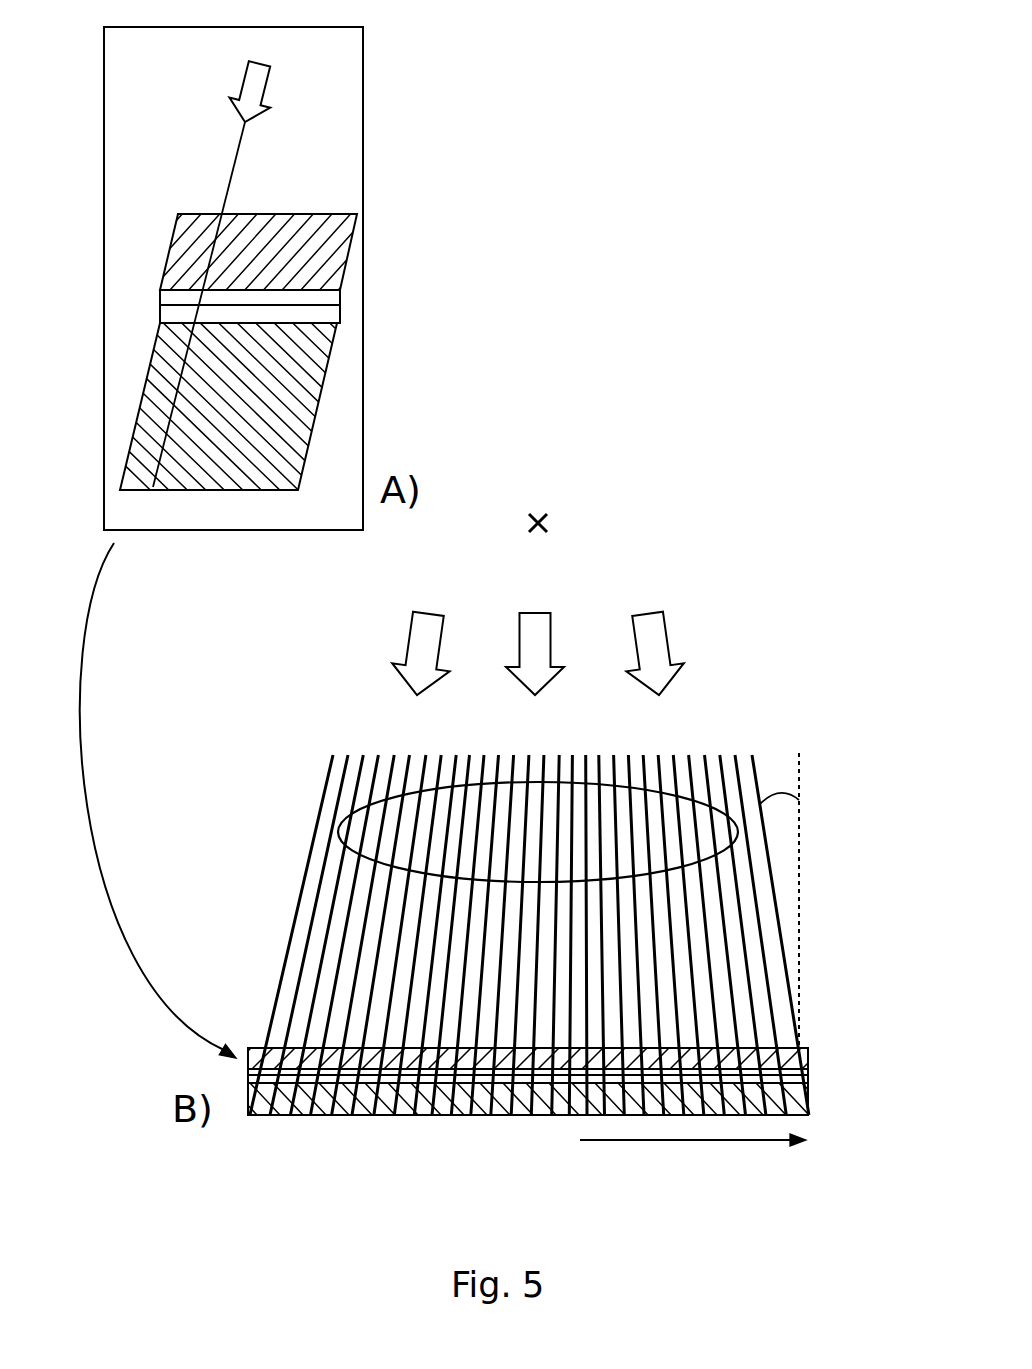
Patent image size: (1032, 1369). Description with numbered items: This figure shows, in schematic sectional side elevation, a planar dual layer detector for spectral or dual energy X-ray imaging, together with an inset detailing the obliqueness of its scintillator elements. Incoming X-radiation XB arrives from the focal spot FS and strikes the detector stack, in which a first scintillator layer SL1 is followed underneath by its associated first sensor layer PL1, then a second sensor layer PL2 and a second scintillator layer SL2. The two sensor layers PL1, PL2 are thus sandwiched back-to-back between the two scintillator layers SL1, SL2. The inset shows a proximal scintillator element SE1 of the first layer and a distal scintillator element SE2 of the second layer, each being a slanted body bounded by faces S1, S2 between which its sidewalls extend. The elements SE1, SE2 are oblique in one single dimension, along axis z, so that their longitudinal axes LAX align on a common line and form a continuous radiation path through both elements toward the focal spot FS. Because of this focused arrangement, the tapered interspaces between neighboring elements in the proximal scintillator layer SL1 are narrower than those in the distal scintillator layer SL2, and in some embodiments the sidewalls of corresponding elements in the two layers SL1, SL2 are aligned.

The X-ray beam XB is at (218, 143).
The longitudinal axis LAX is at (238, 163).
The face S1 is at (190, 214).
The face S2 is at (325, 288).
The scintillator element SE1 is at (162, 256).
The scintillator element SE2 is at (168, 365).
The focal spot FS is at (559, 523).
The first scintillator layer SL1 is at (812, 1052).
The first sensor layer PL1 is at (812, 1070).
The second sensor layer PL2 is at (812, 1080).
The second scintillator layer SL2 is at (812, 1100).
The axis z is at (693, 1156).